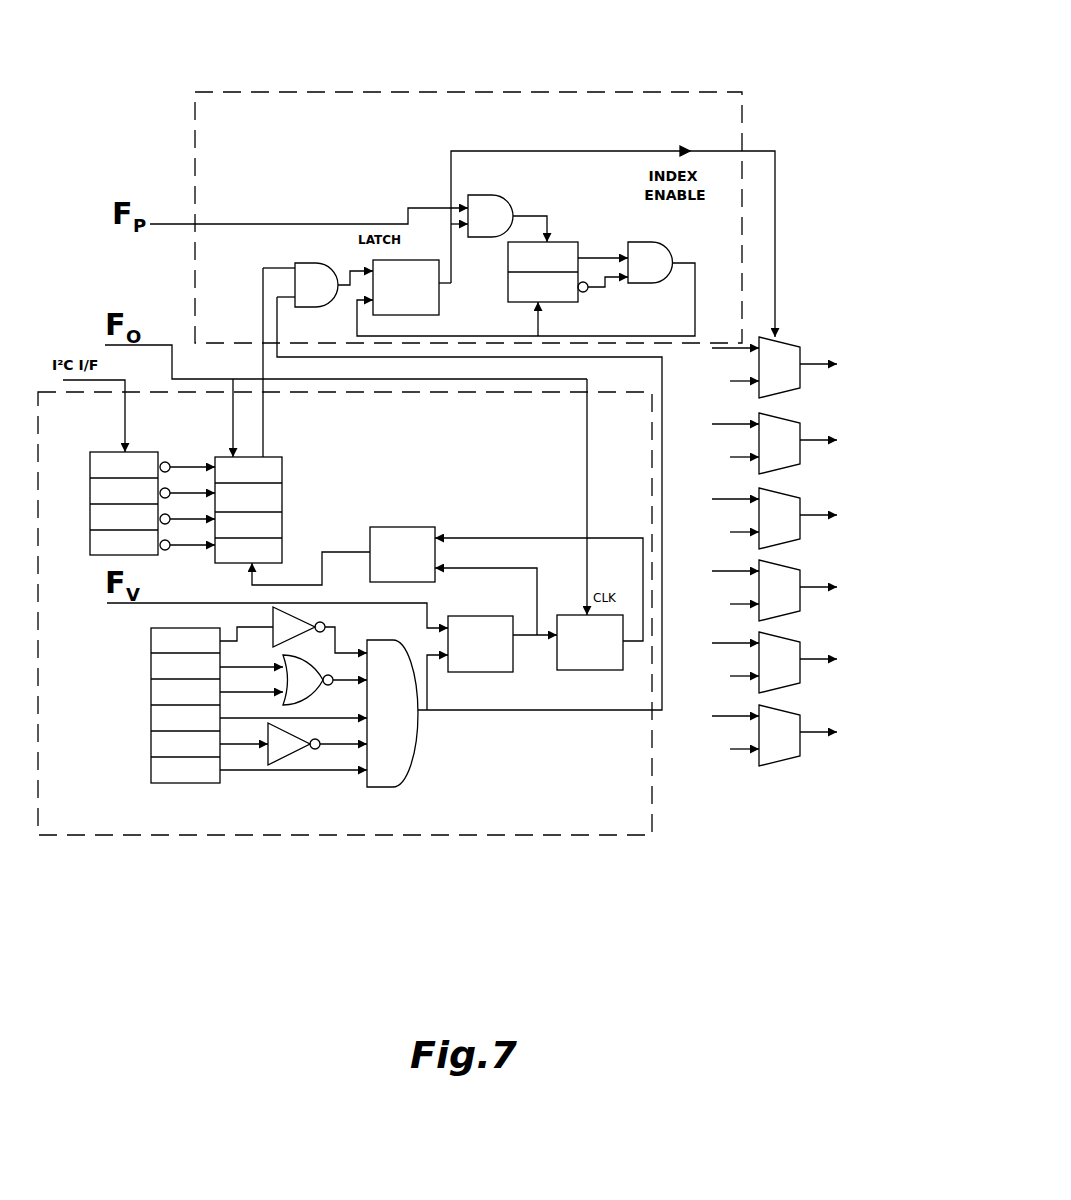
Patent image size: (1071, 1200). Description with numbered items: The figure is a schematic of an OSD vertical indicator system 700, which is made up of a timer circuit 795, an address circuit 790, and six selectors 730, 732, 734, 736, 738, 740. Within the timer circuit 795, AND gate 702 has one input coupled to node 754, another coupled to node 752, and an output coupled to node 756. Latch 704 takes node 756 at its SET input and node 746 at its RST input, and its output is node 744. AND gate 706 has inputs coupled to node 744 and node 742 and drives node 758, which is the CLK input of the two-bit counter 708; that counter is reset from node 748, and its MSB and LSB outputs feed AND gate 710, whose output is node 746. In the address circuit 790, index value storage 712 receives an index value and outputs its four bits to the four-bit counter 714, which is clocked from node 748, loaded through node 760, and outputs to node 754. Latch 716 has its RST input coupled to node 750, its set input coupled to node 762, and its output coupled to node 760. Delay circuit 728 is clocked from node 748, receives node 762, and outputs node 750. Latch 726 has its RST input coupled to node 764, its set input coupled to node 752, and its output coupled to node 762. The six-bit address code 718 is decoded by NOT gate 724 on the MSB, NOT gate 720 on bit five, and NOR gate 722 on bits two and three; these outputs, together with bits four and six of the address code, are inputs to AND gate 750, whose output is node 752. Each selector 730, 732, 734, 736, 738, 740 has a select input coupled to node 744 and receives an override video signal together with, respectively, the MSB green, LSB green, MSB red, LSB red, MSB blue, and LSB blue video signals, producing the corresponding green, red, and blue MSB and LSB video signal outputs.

The OSD vertical indicator system 700 is at (704, 66).
The AND gate 702 is at (310, 308).
The latch 704 is at (418, 259).
The AND gate 706 is at (518, 188).
The 2 bit counter 708 is at (593, 235).
The AND gate 710 is at (683, 238).
The index value storage 712 is at (140, 556).
The 4 bit counter 714 is at (280, 503).
The latch 716 is at (440, 527).
The 6 bit address code 718 is at (195, 784).
The NOT gate 720 is at (300, 750).
The NOR gate 722 is at (330, 686).
The NOT gate 724 is at (303, 617).
The latch 726 is at (490, 673).
The delay circuit 728 is at (580, 672).
The selector 730 is at (797, 345).
The selector 732 is at (804, 409).
The selector 734 is at (797, 496).
The selector 736 is at (797, 568).
The selector 738 is at (797, 640).
The selector 740 is at (797, 713).
The node 742 is at (322, 222).
The node 744 is at (565, 150).
The node 746 is at (700, 297).
The node 748 is at (588, 455).
The AND gate 750 is at (398, 788).
The node 752 is at (575, 712).
The node 754 is at (263, 317).
The node 756 is at (350, 270).
The node 758 is at (552, 215).
The node 760 is at (333, 551).
The node 762 is at (537, 580).
The node 764 is at (430, 607).
The address circuit 790 is at (215, 836).
The timer circuit 795 is at (268, 92).